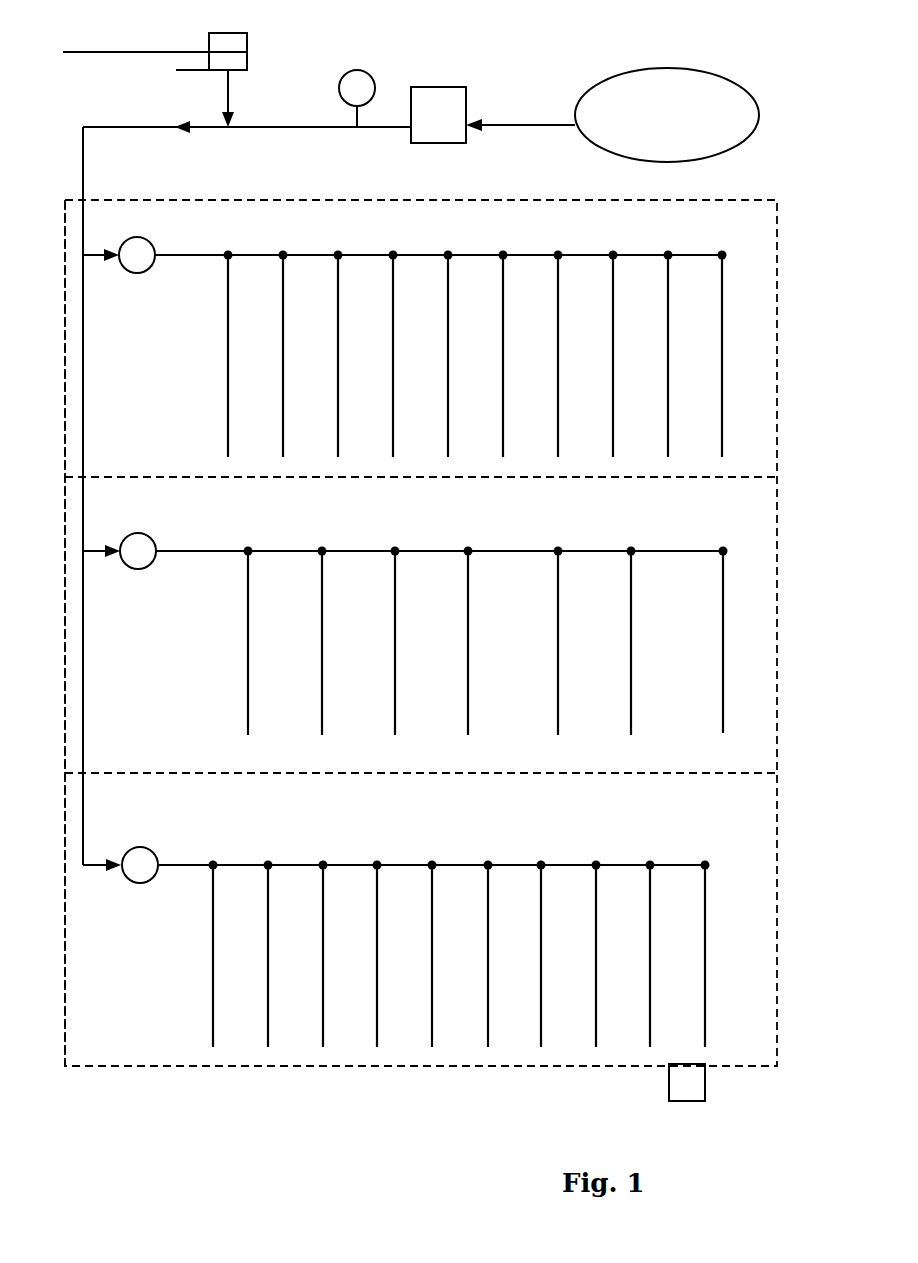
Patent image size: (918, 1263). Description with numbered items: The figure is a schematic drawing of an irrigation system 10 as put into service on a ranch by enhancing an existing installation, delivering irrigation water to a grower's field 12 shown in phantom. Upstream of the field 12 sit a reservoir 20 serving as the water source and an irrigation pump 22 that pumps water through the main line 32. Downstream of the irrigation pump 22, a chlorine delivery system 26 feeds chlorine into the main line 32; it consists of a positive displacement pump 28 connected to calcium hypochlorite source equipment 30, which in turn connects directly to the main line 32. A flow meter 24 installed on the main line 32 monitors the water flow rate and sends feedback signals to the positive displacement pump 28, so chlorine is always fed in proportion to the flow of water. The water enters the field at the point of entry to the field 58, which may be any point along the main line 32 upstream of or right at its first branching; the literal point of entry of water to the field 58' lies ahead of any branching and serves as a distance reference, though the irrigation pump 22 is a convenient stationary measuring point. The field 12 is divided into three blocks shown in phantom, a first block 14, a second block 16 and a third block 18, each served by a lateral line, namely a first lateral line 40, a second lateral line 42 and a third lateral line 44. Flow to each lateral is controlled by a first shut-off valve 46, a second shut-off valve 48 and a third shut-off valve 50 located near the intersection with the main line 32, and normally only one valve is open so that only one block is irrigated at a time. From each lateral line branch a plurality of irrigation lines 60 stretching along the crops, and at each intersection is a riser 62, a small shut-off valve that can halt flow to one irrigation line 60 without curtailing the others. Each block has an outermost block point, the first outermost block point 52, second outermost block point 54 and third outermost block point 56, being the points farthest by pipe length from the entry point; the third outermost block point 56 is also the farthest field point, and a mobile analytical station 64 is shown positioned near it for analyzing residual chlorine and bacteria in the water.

The irrigation system 10 is at (192, 1127).
The field 12 is at (777, 512).
The first block 14 is at (777, 382).
The second block 16 is at (777, 643).
The third block 18 is at (777, 899).
The reservoir 20 is at (740, 85).
The irrigation pump 22 is at (430, 87).
The flow meter 24 is at (362, 70).
The chlorine delivery system 26 is at (140, 56).
The positive displacement pump 28 is at (247, 33).
The calcium hypochlorite source equipment 30 is at (176, 75).
The main line 32 is at (283, 127).
The first lateral line 40 is at (687, 255).
The second lateral line 42 is at (670, 551).
The third lateral line 44 is at (670, 865).
The first shut-off valve 46 is at (124, 242).
The second shut-off valve 48 is at (137, 533).
The third shut-off valve 50 is at (128, 878).
The first outermost block point 52 is at (722, 457).
The second outermost block point 54 is at (723, 733).
The third outermost block point 56 is at (705, 1047).
The point of entry to the field 58 is at (247, 104).
The point of entry of water to the field 58' is at (35, 613).
The irrigation lines 60 is at (503, 330).
The riser 62 is at (338, 255).
The mobile analytical station 64 is at (669, 1080).